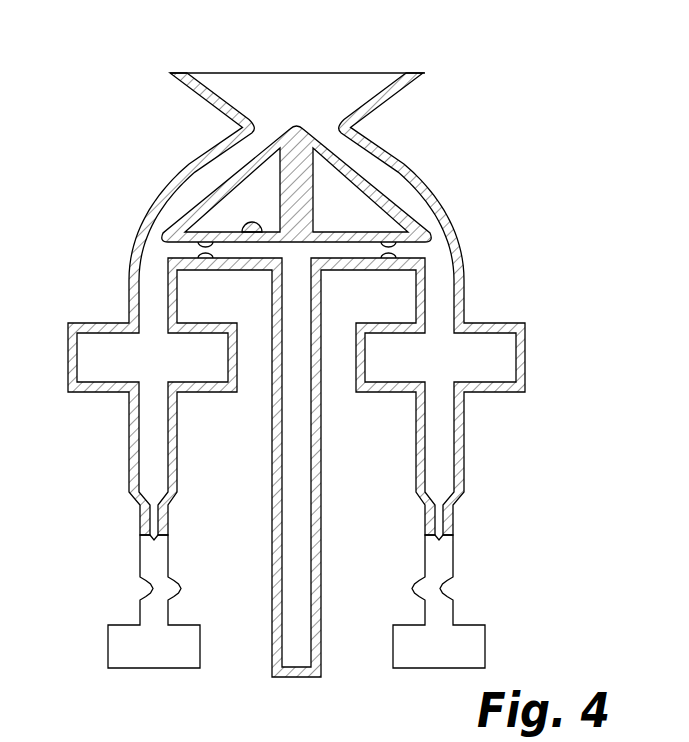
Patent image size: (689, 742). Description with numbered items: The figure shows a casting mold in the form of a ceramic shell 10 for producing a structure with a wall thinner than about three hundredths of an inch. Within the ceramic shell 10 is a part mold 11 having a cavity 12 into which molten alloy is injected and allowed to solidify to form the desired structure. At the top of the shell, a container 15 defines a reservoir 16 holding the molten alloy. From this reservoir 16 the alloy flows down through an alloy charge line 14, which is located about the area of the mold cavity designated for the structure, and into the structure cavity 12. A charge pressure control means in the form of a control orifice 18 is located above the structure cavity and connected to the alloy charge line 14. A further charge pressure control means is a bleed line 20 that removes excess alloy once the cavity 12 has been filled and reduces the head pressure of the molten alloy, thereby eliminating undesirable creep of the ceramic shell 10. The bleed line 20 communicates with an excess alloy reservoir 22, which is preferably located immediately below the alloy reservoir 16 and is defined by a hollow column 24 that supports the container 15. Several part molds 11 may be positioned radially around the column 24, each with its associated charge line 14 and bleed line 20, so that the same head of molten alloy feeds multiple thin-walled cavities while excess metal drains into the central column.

The ceramic shell 10 is at (385, 117).
The part mold 11 is at (130, 410).
The cavity 12 is at (161, 463).
The alloy charge line 14 is at (161, 304).
The container 15 is at (379, 94).
The reservoir 16 is at (272, 102).
The control orifice 18 is at (187, 248).
The bleed line 20 is at (243, 237).
The excess alloy reservoir 22 is at (288, 602).
The hollow column 24 is at (321, 485).